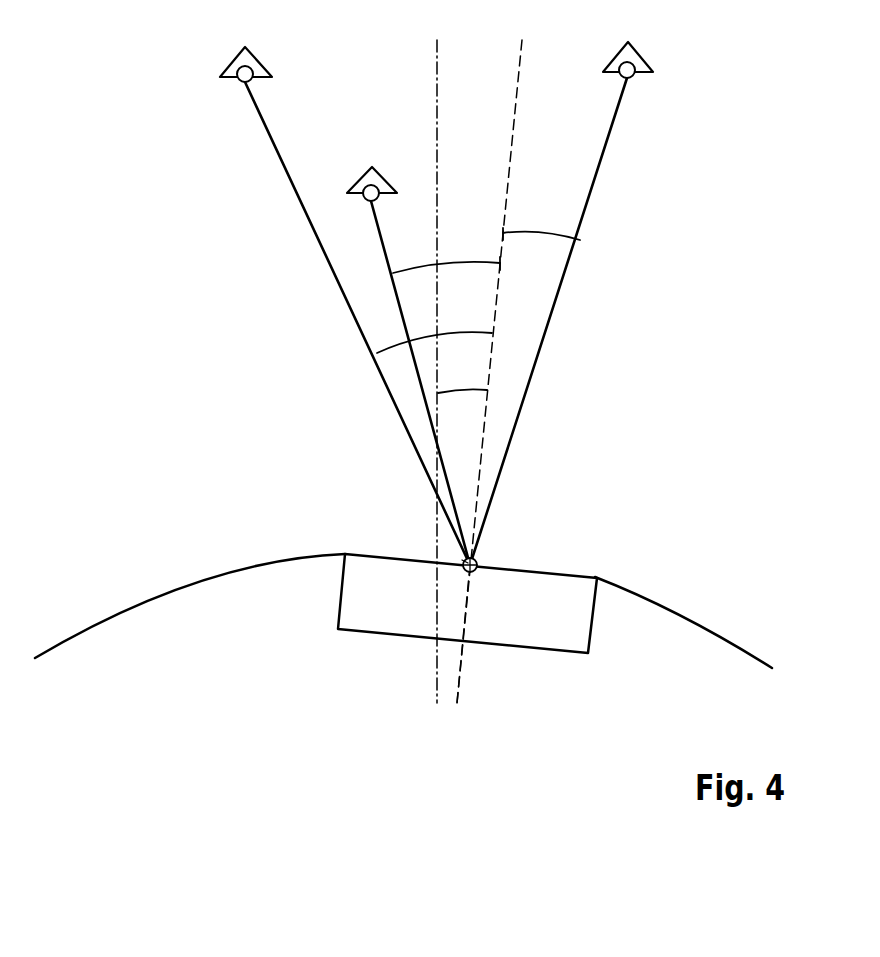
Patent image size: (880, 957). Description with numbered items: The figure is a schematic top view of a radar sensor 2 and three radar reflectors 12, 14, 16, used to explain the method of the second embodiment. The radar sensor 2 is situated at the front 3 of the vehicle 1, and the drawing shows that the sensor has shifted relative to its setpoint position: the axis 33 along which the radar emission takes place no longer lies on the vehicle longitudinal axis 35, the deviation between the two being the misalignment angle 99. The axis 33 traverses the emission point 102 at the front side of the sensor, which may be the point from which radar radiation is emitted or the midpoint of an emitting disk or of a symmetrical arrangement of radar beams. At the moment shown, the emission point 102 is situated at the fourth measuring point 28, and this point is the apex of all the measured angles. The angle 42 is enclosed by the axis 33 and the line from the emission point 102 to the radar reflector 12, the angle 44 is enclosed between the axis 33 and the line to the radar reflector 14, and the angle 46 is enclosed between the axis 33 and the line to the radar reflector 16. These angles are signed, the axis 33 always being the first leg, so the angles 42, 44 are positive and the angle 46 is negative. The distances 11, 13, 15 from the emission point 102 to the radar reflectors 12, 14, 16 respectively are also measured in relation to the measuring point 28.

The vehicle 1 is at (237, 598).
The radar sensor 2 is at (357, 605).
The front 3 is at (462, 560).
The distance 11 is at (262, 107).
The radar reflector 12 is at (226, 61).
The distance 13 is at (380, 222).
The radar reflector 14 is at (356, 182).
The distance 15 is at (616, 118).
The radar reflector 16 is at (643, 60).
The fourth measuring point 28 is at (480, 578).
The axis 33 is at (520, 48).
The vehicle longitudinal axis 35 is at (437, 68).
The angle 42 is at (377, 353).
The angle 44 is at (394, 273).
The angle 46 is at (577, 237).
The misalignment angle 99 is at (455, 392).
The emission point 102 is at (478, 560).